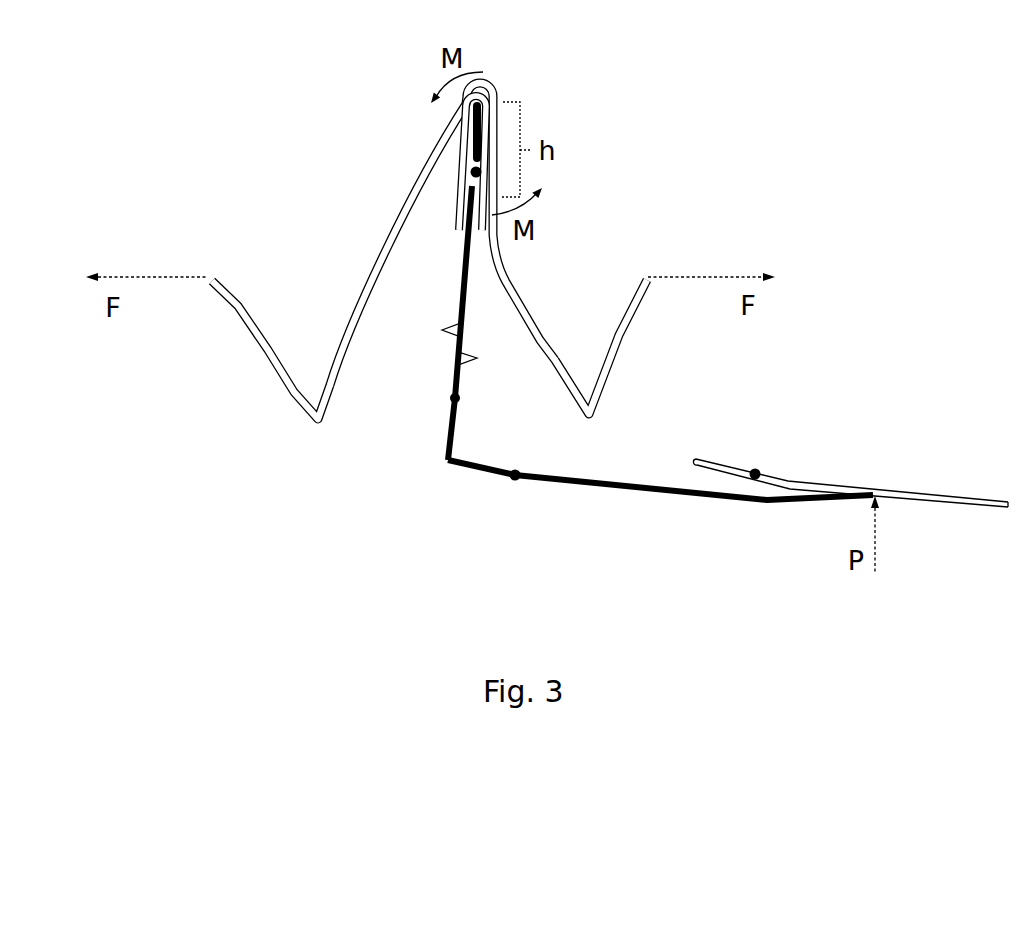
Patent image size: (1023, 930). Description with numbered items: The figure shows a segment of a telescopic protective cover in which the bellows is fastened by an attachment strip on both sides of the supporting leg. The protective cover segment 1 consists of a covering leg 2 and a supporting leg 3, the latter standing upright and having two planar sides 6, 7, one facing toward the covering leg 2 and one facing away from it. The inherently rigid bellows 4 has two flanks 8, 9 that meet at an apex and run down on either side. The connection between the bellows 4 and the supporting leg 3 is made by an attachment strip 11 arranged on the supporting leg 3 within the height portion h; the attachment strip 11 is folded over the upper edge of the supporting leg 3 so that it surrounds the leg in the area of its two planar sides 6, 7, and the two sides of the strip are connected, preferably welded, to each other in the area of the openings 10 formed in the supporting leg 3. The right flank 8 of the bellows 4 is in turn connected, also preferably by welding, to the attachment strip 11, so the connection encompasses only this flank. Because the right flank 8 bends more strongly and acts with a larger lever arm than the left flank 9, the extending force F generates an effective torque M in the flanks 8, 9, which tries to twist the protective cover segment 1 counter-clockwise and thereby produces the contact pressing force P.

The protective cover segment 1 is at (499, 548).
The covering leg 2 is at (515, 473).
The supporting leg 3 is at (452, 398).
The bellows 4 is at (270, 390).
The planar side 6 is at (470, 358).
The planar side 7 is at (443, 330).
The flank 8 is at (503, 282).
The flank 9 is at (390, 225).
The openings 10 is at (481, 171).
The attachment strip 11 is at (455, 135).